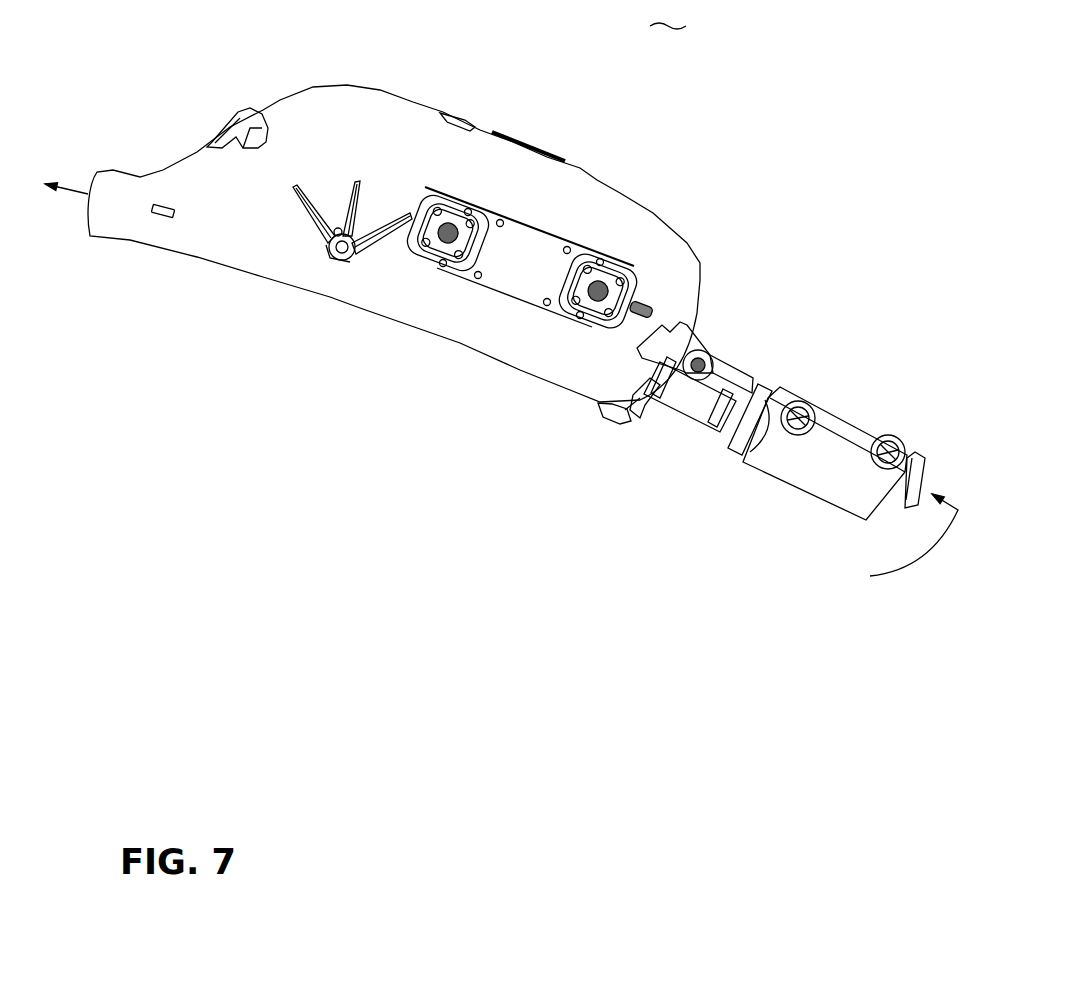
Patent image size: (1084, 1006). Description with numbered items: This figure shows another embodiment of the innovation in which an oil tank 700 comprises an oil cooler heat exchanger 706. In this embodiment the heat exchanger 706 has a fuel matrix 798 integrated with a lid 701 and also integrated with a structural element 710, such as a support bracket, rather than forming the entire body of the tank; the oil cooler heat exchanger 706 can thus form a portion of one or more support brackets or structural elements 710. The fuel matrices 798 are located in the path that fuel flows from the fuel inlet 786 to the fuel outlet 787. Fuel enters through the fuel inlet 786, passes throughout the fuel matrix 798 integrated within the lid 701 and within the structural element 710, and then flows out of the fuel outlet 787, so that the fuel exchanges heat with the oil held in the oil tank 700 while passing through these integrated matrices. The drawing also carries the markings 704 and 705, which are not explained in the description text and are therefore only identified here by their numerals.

The oil tank 700 is at (662, 178).
The lid 701 is at (824, 386).
The rotation direction arrow 704 is at (895, 542).
The forward direction arrow 705 is at (67, 188).
The oil cooler heat exchanger 706 is at (670, 14).
The structural element 710 is at (527, 272).
The fuel inlet 786 is at (892, 440).
The fuel outlet 787 is at (798, 402).
The fuel matrix 798 is at (445, 200).